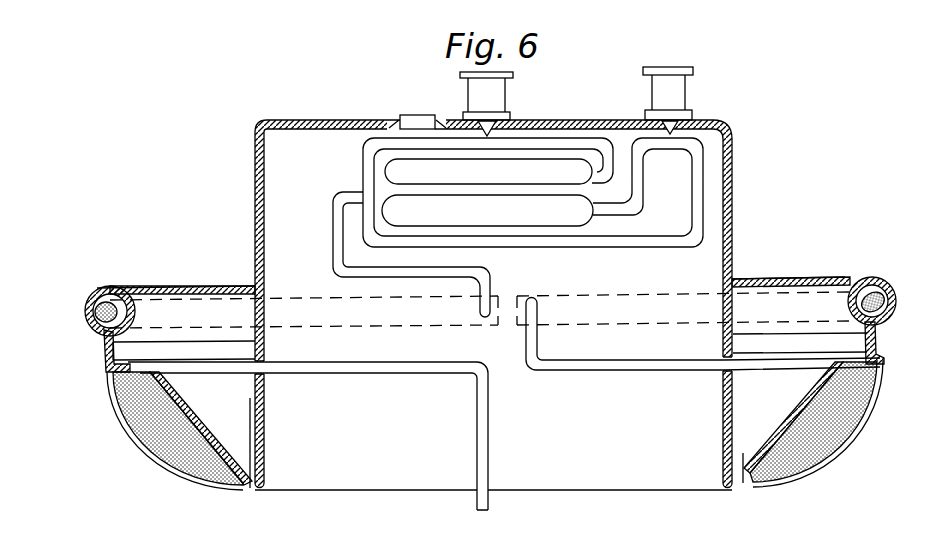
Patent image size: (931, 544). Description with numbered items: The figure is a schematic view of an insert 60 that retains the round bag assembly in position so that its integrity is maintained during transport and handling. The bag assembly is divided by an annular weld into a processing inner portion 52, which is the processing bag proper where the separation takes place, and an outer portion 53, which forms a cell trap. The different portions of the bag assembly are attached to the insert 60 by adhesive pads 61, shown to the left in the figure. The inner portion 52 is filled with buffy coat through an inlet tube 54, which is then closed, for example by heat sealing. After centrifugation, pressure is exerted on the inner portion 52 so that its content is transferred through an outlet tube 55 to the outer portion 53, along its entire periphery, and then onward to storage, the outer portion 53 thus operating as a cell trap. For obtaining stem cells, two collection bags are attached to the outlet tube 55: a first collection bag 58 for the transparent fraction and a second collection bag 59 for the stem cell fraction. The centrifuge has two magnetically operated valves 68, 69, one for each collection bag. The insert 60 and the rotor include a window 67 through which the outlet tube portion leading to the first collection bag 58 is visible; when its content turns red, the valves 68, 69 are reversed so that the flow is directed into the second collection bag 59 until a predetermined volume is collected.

The inner portion 52 is at (150, 438).
The outer portion 53 is at (96, 316).
The inlet tube 54 is at (490, 447).
The outlet tube 55 is at (602, 371).
The first collection bag 58 is at (512, 172).
The second collection bag 59 is at (548, 212).
The insert 60 is at (255, 206).
The adhesive pads 61 is at (266, 465).
The window 67 is at (400, 117).
The magnetically operated valve 68 is at (472, 96).
The magnetically operated valve 69 is at (683, 96).